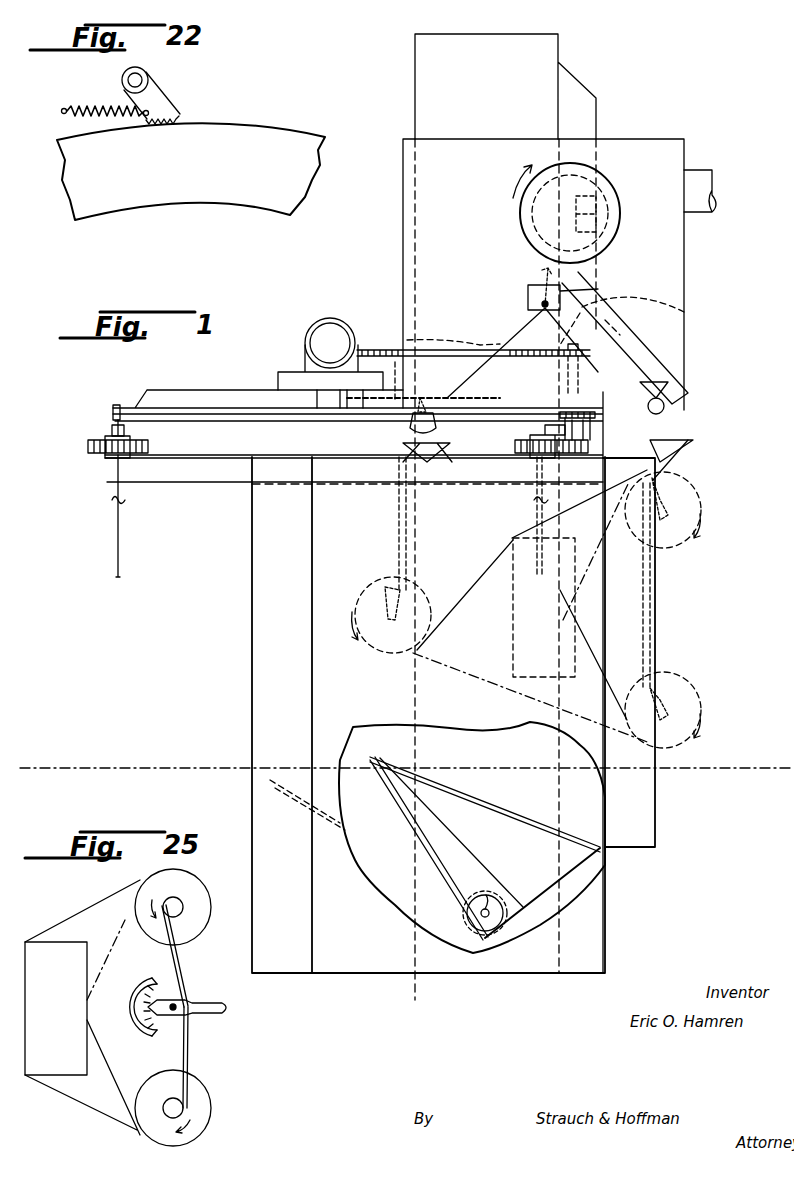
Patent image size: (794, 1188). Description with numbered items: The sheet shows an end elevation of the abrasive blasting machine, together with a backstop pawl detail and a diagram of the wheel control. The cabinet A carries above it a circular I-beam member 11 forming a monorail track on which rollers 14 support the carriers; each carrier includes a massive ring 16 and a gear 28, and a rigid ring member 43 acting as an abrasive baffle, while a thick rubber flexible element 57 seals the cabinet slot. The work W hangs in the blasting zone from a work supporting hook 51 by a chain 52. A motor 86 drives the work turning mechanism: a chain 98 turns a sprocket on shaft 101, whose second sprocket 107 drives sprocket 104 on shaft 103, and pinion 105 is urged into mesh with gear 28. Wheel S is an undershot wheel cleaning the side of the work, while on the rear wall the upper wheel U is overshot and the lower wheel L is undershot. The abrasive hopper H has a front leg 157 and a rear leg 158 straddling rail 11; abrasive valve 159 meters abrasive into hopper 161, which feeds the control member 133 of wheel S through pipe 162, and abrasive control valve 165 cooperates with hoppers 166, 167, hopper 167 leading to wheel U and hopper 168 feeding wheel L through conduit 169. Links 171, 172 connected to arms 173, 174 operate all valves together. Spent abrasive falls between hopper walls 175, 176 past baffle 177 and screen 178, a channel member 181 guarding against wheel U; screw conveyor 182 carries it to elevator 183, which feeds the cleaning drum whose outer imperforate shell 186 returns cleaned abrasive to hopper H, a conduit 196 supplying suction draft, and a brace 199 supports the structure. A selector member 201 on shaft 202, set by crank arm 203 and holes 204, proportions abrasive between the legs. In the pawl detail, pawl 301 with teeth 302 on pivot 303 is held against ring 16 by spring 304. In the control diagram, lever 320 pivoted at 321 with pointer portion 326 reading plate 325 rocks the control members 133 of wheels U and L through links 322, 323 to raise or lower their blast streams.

In FIG. 1, the I-beam member 11 is at (325, 418).
In FIG. 1, the rollers 14 is at (113, 408).
In FIG. 22, the ring 16 is at (148, 209).
In FIG. 1, the ring 16 is at (112, 428).
In FIG. 1, the gear 28 is at (88, 446).
In FIG. 1, the ring member 43 is at (164, 484).
In FIG. 1, the work supporting hook 51 is at (110, 498).
In FIG. 1, the chain 52 is at (120, 560).
In FIG. 1, the flexible element 57 is at (203, 455).
In FIG. 1, the motor 86 is at (335, 343).
In FIG. 1, the chain 98 is at (538, 358).
In FIG. 1, the shaft 101 is at (578, 377).
In FIG. 1, the shaft 103 is at (590, 430).
In FIG. 1, the sprocket 104 is at (595, 414).
In FIG. 1, the pinion 105 is at (588, 446).
In FIG. 1, the second sprocket 107 is at (580, 346).
In FIG. 25, the control member 133 is at (184, 906).
In FIG. 1, the front leg 157 is at (403, 320).
In FIG. 1, the rear leg 158 is at (684, 360).
In FIG. 1, the abrasive valve 159 is at (410, 430).
In FIG. 1, the hopper 161 is at (437, 452).
In FIG. 1, the pipe 162 is at (398, 515).
In FIG. 1, the abrasive control valve 165 is at (668, 412).
In FIG. 1, the hopper 166 is at (690, 447).
In FIG. 1, the hopper 167 is at (684, 460).
In FIG. 1, the hopper 168 is at (678, 308).
In FIG. 1, the conduit 169 is at (652, 590).
In FIG. 1, the link 171 is at (386, 379).
In FIG. 1, the link 172 is at (445, 395).
In FIG. 1, the arm 173 is at (413, 395).
In FIG. 1, the arm 174 is at (670, 392).
In FIG. 1, the hopper wall 175 is at (392, 830).
In FIG. 1, the hopper wall 176 is at (565, 878).
In FIG. 1, the baffle 177 is at (460, 852).
In FIG. 1, the screen 178 is at (518, 897).
In FIG. 1, the channel member 181 is at (512, 822).
In FIG. 1, the horizontal screw conveyor 182 is at (485, 932).
In FIG. 1, the elevator 183 is at (505, 92).
In FIG. 1, the outer imperforate shell 186 is at (606, 196).
In FIG. 1, the conduit 196 is at (695, 172).
In FIG. 1, the brace 199 is at (660, 350).
In FIG. 1, the selector member 201 is at (535, 283).
In FIG. 1, the shaft 202 is at (540, 312).
In FIG. 1, the crank arm 203 is at (528, 297).
In FIG. 1, the holes 204 is at (593, 287).
In FIG. 22, the pawl 301 is at (161, 96).
In FIG. 22, the teeth 302 is at (162, 122).
In FIG. 22, the pivot 303 is at (124, 86).
In FIG. 22, the spring 304 is at (100, 115).
In FIG. 25, the lever 320 is at (212, 1010).
In FIG. 25, the pivot 321 is at (172, 1004).
In FIG. 25, the link 322 is at (180, 975).
In FIG. 25, the link 323 is at (188, 1052).
In FIG. 25, the plate 325 is at (146, 1025).
In FIG. 25, the pointer portion 326 is at (145, 1003).
In FIG. 1, the cabinet A is at (243, 576).
In FIG. 1, the abrasive hopper H is at (392, 241).
In FIG. 1, the wheel S is at (356, 598).
In FIG. 1, the work W is at (503, 543).
In FIG. 25, the work W is at (57, 1085).
In FIG. 1, the upper wheel U is at (708, 496).
In FIG. 25, the upper wheel U is at (204, 945).
In FIG. 1, the lower wheel L is at (697, 678).
In FIG. 25, the lower wheel L is at (218, 1122).